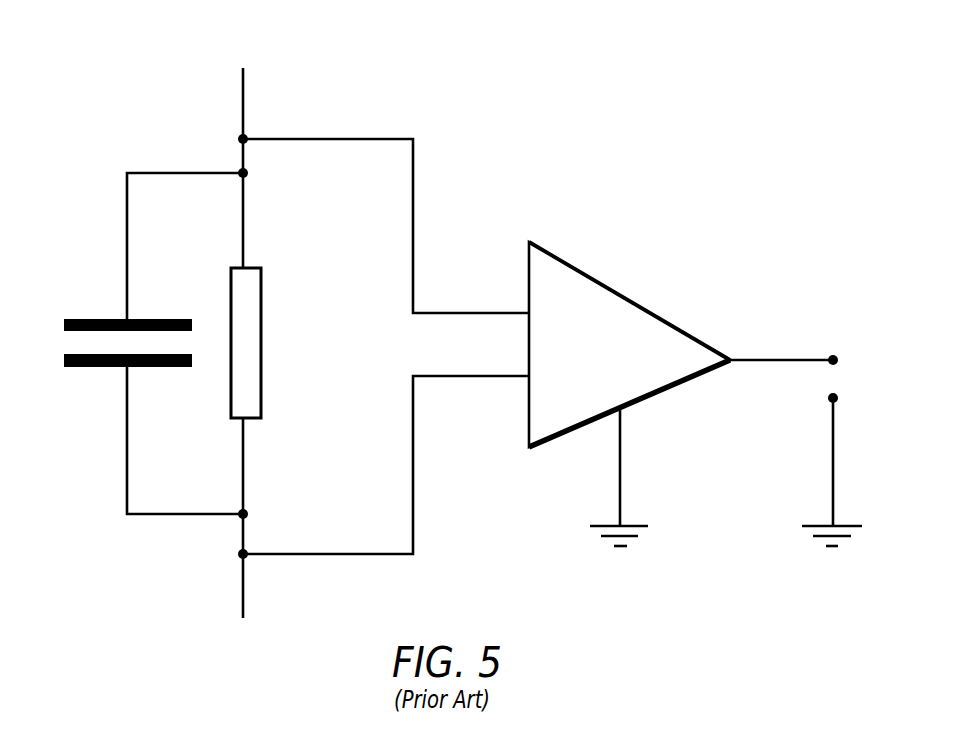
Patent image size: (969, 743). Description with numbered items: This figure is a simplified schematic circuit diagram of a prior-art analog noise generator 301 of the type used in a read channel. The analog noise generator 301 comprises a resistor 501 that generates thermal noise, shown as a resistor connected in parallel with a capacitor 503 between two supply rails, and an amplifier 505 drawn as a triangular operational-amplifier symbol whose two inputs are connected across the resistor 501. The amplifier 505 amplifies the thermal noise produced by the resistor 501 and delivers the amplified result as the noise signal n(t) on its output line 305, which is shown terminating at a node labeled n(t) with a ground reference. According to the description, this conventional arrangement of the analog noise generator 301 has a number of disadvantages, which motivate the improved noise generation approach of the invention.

The analog noise generator 301 is at (612, 127).
The capacitor C 503 is at (100, 319).
The resistor 501 is at (262, 305).
The amplifier 505 is at (612, 284).
The line 305 is at (835, 355).